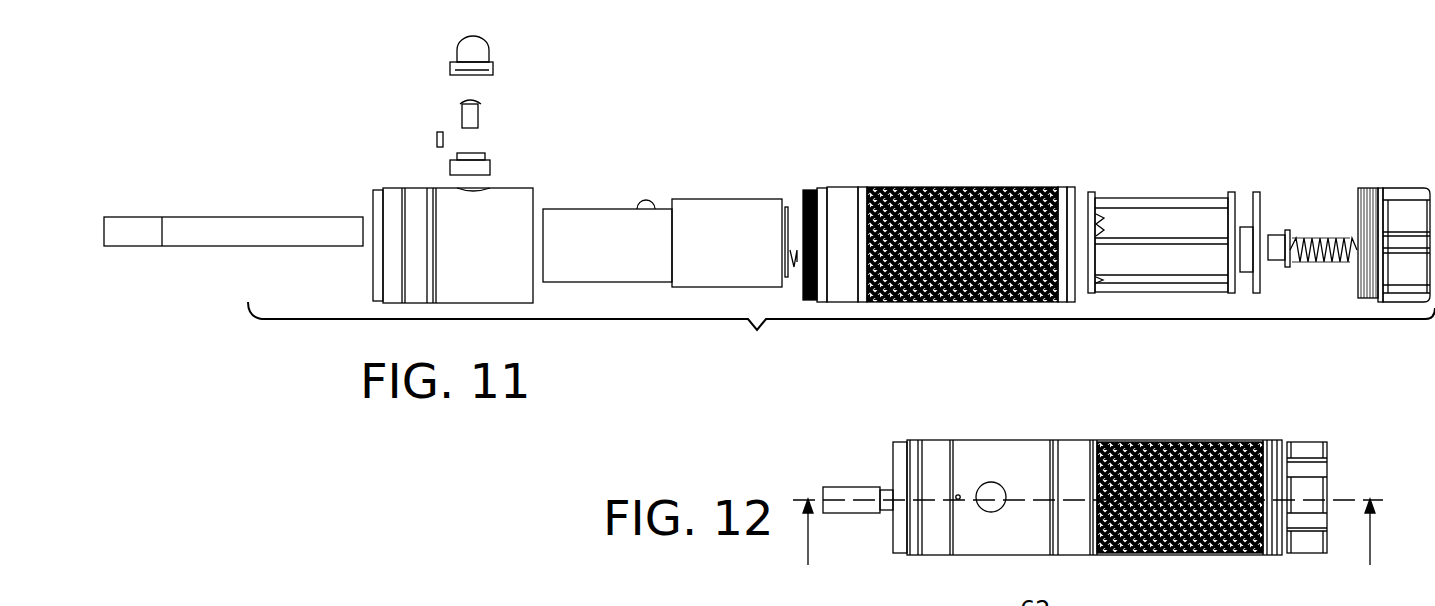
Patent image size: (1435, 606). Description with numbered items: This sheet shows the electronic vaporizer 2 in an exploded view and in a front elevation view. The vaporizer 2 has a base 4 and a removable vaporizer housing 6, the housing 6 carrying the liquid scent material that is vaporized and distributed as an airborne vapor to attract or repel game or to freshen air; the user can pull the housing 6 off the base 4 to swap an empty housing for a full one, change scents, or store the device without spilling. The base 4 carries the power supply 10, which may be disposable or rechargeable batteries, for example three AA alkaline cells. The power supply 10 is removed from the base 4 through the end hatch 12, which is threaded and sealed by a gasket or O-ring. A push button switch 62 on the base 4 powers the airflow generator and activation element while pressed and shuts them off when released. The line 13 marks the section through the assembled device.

In FIG. 11, the electronic vaporizer 2 is at (841, 332).
In FIG. 11, the base 4 is at (920, 187).
In FIG. 12, the base 4 is at (1008, 452).
In FIG. 11, the vaporizer housing 6 is at (227, 246).
In FIG. 12, the vaporizer housing 6 is at (851, 487).
In FIG. 11, the power supply 10 is at (1155, 204).
In FIG. 12, the power supply 10 is at (1263, 601).
In FIG. 11, the end hatch 12 is at (1397, 188).
In FIG. 12, the end hatch 12 is at (1330, 450).
In FIG. 12, the section line 13 is at (1090, 548).
In FIG. 11, the push button switch 62 is at (457, 52).
In FIG. 12, the push button switch 62 is at (989, 500).